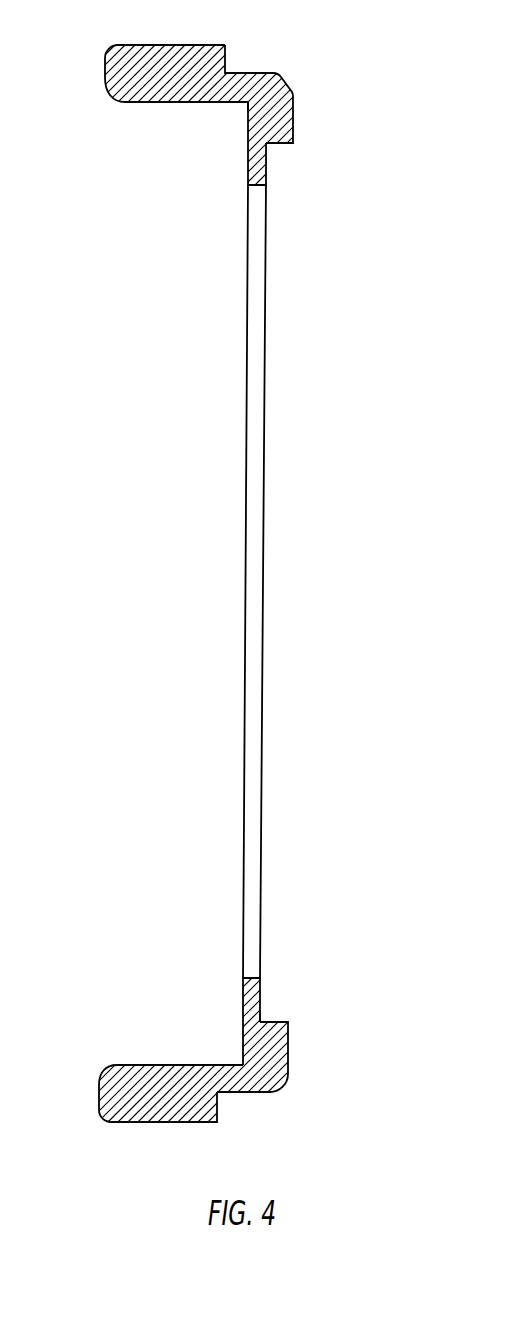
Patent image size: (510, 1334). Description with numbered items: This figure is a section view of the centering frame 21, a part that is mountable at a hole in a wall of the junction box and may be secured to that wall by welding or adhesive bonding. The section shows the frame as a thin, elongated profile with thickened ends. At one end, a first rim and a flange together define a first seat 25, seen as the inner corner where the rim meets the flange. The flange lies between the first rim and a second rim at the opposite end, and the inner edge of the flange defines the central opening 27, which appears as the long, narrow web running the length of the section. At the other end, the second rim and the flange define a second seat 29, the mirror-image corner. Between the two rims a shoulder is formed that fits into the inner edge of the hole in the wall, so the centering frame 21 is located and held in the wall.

The centering frame 21 is at (229, 574).
The first seat 25 is at (224, 126).
The central opening 27 is at (169, 536).
The second seat 29 is at (286, 1002).